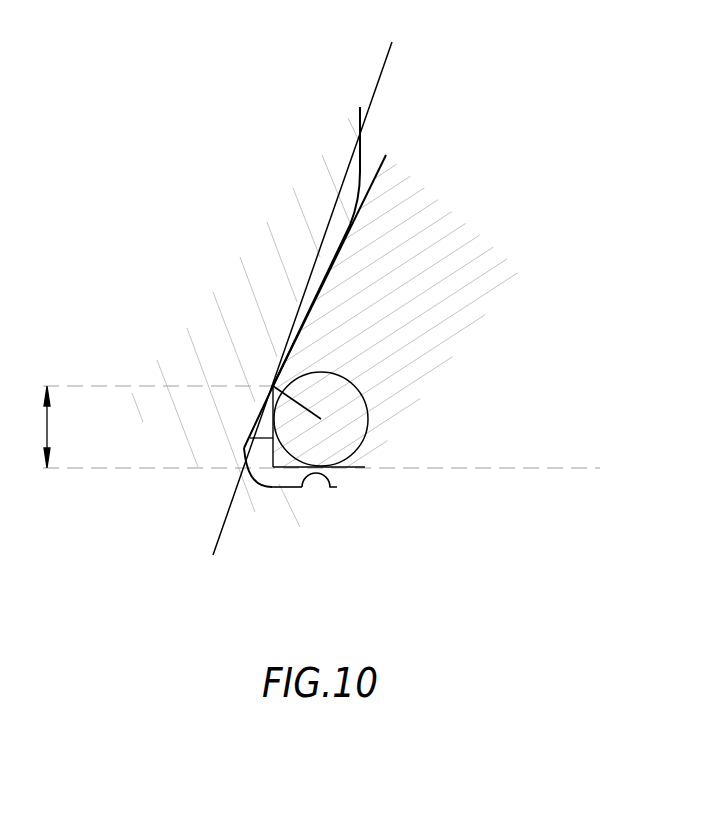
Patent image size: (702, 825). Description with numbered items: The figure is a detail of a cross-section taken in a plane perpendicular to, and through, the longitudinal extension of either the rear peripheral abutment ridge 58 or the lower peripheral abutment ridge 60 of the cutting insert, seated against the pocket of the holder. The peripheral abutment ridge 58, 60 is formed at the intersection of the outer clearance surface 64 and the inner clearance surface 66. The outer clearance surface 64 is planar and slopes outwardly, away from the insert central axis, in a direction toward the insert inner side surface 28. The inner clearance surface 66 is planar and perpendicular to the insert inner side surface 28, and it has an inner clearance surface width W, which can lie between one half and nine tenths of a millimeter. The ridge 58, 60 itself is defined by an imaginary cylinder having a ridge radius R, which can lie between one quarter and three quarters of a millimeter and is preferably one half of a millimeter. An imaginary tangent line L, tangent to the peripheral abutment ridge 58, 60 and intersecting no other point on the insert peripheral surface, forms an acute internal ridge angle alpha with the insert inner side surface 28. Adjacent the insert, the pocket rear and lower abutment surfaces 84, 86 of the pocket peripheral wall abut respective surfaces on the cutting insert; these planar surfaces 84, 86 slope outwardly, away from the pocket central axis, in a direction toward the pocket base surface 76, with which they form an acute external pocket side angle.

The rear peripheral abutment ridge 58 is at (264, 311).
The lower peripheral abutment ridge 60 is at (273, 387).
The outer clearance surface 64 is at (355, 215).
The inner clearance surface 66 is at (260, 486).
The pocket base surface 76 is at (330, 487).
The insert inner side surface 28 is at (337, 467).
The pocket rear abutment surface 84 is at (408, 495).
The pocket lower abutment surface 86 is at (318, 450).
The imaginary tangent line L is at (385, 63).
The ridge radius R is at (273, 386).
The inscribed circle I is at (369, 427).
The inner clearance surface width W is at (32, 427).
The ridge angle alpha is at (275, 487).